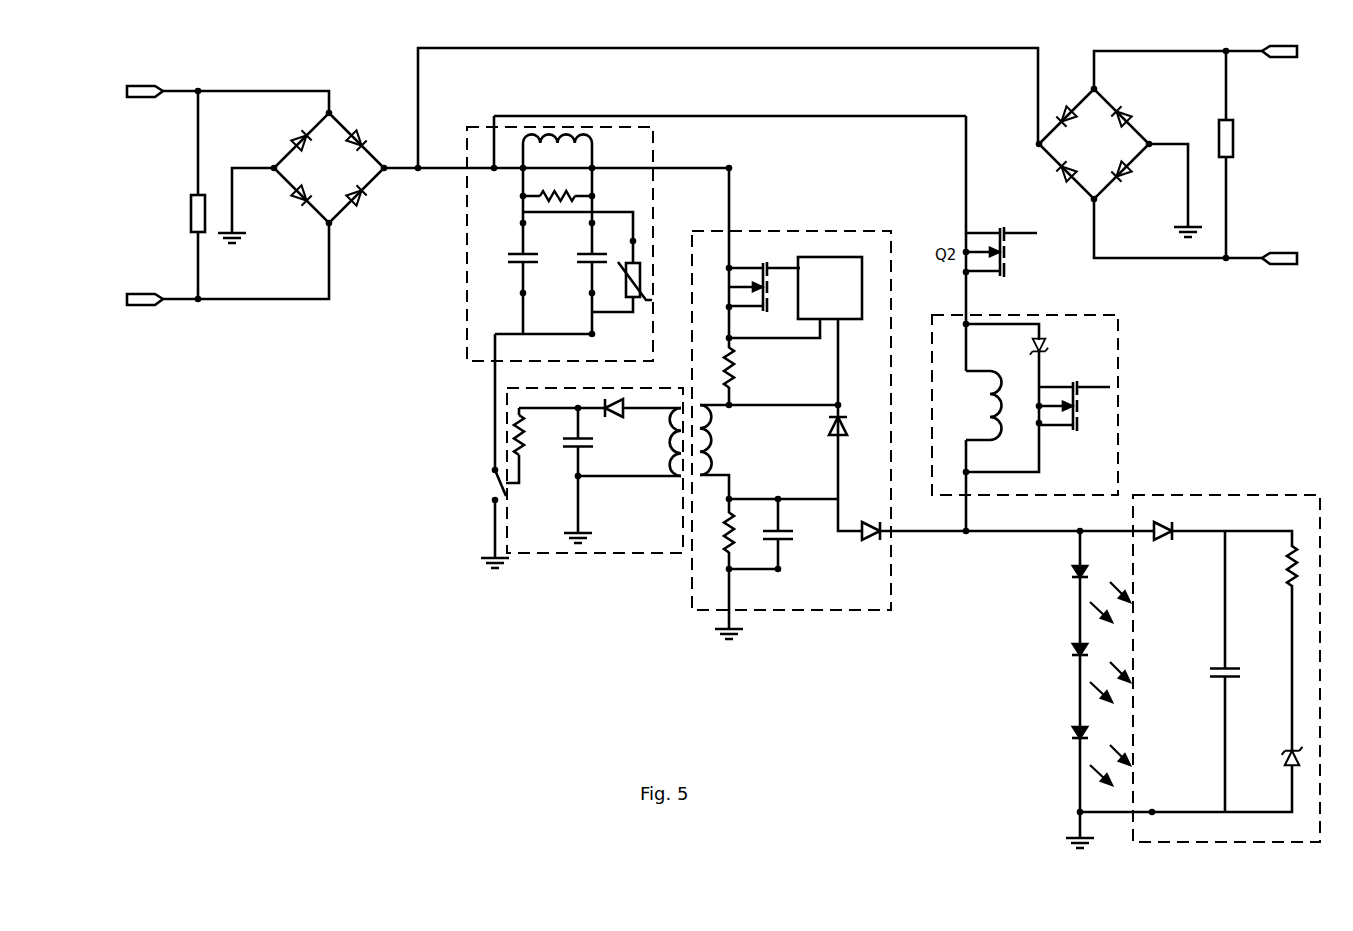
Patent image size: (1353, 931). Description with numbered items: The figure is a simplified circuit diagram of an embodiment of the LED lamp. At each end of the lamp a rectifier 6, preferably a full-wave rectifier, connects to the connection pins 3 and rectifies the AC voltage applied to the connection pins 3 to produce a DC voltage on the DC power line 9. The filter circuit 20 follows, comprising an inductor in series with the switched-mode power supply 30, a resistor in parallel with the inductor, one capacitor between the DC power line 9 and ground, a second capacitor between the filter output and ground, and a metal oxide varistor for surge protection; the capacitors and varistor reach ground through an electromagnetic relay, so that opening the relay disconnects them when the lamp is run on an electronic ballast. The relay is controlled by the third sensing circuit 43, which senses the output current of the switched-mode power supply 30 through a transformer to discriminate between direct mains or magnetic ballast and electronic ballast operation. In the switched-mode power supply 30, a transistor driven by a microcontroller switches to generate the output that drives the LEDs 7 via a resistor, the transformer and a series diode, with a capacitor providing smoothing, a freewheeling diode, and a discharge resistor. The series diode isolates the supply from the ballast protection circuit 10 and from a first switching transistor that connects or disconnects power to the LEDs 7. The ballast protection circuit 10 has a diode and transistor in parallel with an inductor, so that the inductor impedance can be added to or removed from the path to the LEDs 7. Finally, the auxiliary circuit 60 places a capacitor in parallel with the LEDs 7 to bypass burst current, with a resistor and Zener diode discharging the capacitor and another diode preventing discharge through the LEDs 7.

The connection pins 3 is at (143, 100).
The rectifier 6 is at (305, 219).
The DC power line 9 is at (427, 173).
The filter circuit 20 is at (654, 128).
The switched-mode power supply 30 is at (802, 230).
The third sensing circuit 43 is at (545, 553).
The ballast protection circuit 10 is at (1120, 324).
The auxiliary circuit 60 is at (1256, 495).
The LEDs 7 is at (1047, 655).